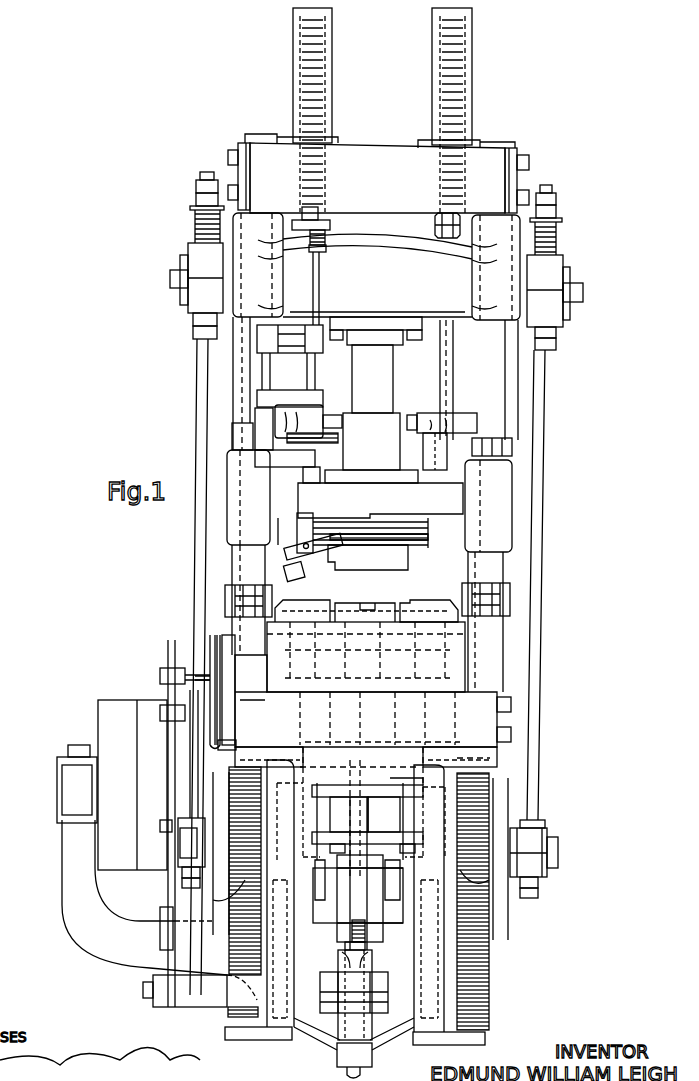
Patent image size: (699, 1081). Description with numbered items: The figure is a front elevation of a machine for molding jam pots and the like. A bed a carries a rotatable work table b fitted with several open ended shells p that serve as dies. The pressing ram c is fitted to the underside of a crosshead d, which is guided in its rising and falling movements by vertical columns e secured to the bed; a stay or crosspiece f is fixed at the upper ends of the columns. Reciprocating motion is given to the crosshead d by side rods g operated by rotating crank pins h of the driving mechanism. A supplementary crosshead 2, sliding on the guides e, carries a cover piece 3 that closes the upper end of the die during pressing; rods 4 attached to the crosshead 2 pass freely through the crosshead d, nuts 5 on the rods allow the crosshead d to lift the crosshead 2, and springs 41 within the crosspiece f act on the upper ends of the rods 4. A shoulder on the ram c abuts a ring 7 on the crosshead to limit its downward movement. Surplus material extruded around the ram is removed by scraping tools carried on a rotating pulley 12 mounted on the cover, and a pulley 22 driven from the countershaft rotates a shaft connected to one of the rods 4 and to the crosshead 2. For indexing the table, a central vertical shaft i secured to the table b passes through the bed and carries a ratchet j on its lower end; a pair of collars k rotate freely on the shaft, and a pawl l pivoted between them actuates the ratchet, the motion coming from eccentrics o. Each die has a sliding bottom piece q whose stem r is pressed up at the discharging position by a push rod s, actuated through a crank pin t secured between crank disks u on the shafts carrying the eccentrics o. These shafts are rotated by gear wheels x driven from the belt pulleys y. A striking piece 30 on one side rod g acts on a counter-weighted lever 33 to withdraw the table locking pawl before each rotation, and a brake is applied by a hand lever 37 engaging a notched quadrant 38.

The springs 41 is at (435, 66).
The stay or crosspiece f is at (382, 160).
The nuts 5 is at (292, 218).
The crosshead d is at (376, 266).
The ring 7 is at (392, 343).
The pressing ram c is at (386, 378).
The rods 4 is at (303, 374).
The pulley 22 is at (330, 443).
The supplementary crosshead 2 is at (424, 512).
The rotating pulley 12 is at (405, 545).
The cover piece 3 is at (355, 567).
The bars or columns e is at (246, 566).
The side rods g is at (196, 552).
The open ended shells p is at (430, 606).
The rotatable work table b is at (455, 650).
The sliding bottom piece q is at (430, 673).
The bed a is at (485, 722).
The stem r is at (302, 716).
The collars k is at (322, 787).
The central vertical shaft i is at (332, 815).
The pawl l is at (405, 815).
The ratchet j is at (383, 830).
The push rod s is at (345, 895).
The crank pin t is at (362, 868).
The crank disks u is at (345, 935).
The gear wheels x is at (228, 1010).
The eccentrics o is at (227, 937).
The crank pins h is at (553, 860).
The notched quadrant 38 is at (210, 648).
The hand lever 37 is at (222, 748).
The striking piece 30 is at (188, 725).
The belt pulleys y is at (118, 708).
The lever 33 is at (166, 893).